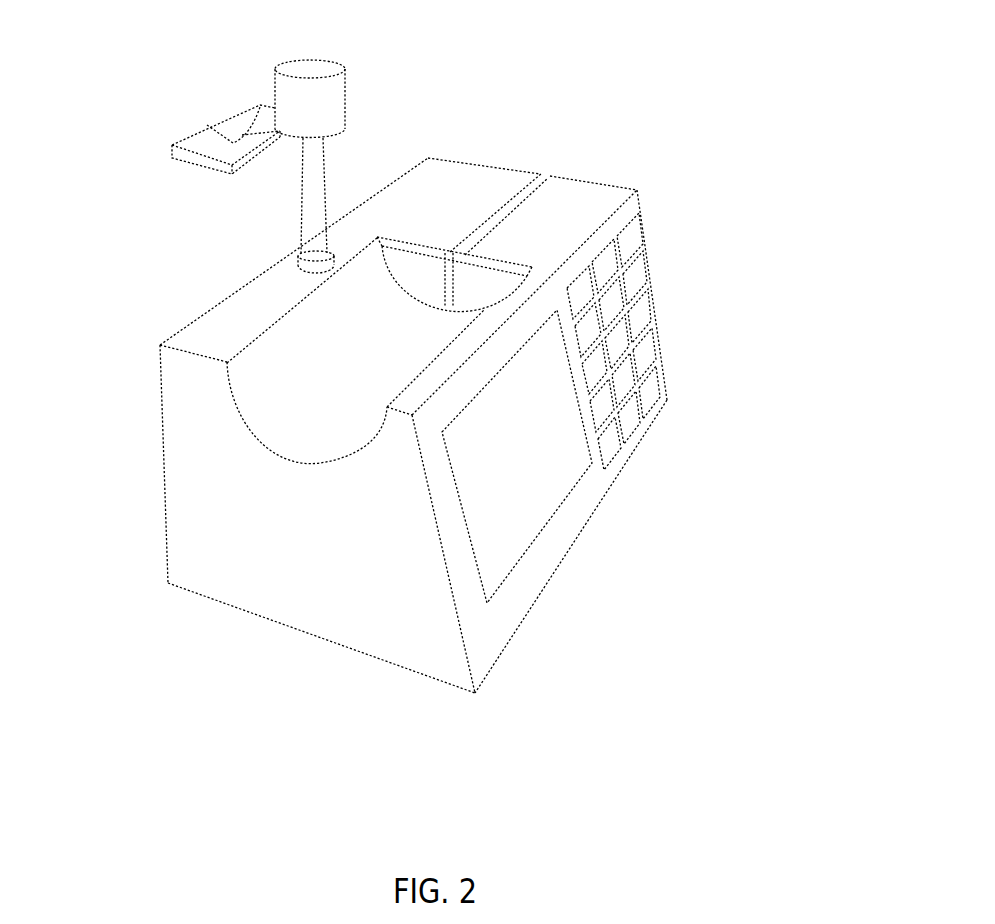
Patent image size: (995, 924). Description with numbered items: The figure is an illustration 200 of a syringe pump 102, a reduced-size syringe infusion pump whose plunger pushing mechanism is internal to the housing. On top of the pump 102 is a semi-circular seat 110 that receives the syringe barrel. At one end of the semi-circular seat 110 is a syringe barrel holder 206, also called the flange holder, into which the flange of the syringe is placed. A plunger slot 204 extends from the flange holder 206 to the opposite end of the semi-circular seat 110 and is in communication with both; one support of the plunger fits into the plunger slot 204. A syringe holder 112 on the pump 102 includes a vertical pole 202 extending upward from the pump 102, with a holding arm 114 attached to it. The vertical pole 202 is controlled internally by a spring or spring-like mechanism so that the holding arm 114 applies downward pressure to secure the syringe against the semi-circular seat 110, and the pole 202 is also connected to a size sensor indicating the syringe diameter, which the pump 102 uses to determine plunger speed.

The illustration 200 is at (681, 72).
The syringe pump 102 is at (173, 330).
The semi-circular seat 110 is at (293, 460).
The syringe holder 112 is at (311, 60).
The holding arm 114 is at (231, 116).
The vertical pole 202 is at (303, 162).
The plunger slot 204 is at (548, 178).
The syringe barrel holder 206 is at (433, 257).